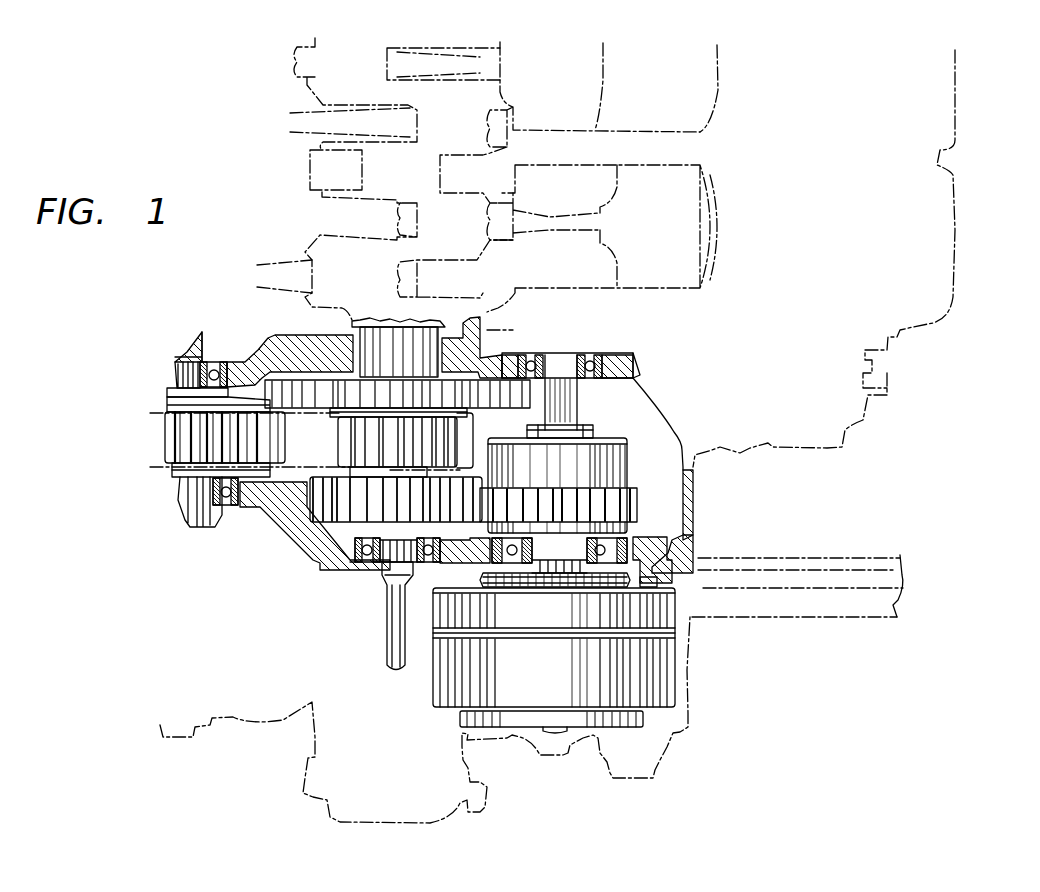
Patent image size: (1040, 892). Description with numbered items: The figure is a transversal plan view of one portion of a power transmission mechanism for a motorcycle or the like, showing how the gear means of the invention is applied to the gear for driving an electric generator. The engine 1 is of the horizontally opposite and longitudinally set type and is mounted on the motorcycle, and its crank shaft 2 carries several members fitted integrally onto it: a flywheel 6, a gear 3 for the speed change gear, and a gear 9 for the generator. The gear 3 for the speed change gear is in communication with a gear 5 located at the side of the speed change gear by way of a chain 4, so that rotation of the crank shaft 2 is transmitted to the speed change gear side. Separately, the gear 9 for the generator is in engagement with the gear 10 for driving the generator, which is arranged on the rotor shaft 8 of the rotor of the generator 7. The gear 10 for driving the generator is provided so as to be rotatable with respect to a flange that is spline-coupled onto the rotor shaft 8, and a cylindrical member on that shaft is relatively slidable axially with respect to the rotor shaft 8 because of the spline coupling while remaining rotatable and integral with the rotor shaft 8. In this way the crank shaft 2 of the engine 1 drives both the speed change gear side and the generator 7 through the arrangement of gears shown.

The engine 1 is at (950, 220).
The crank shaft 2 is at (378, 322).
The gear for speed change gear 3 is at (362, 442).
The chain 4 is at (307, 463).
The gear at the side of the speed change gear 5 is at (180, 438).
The flywheel 6 is at (280, 385).
The generator 7 is at (653, 680).
The rotor shaft 8 is at (563, 405).
The gear for the generator 9 is at (320, 512).
The gear for driving the generator 10 is at (638, 507).